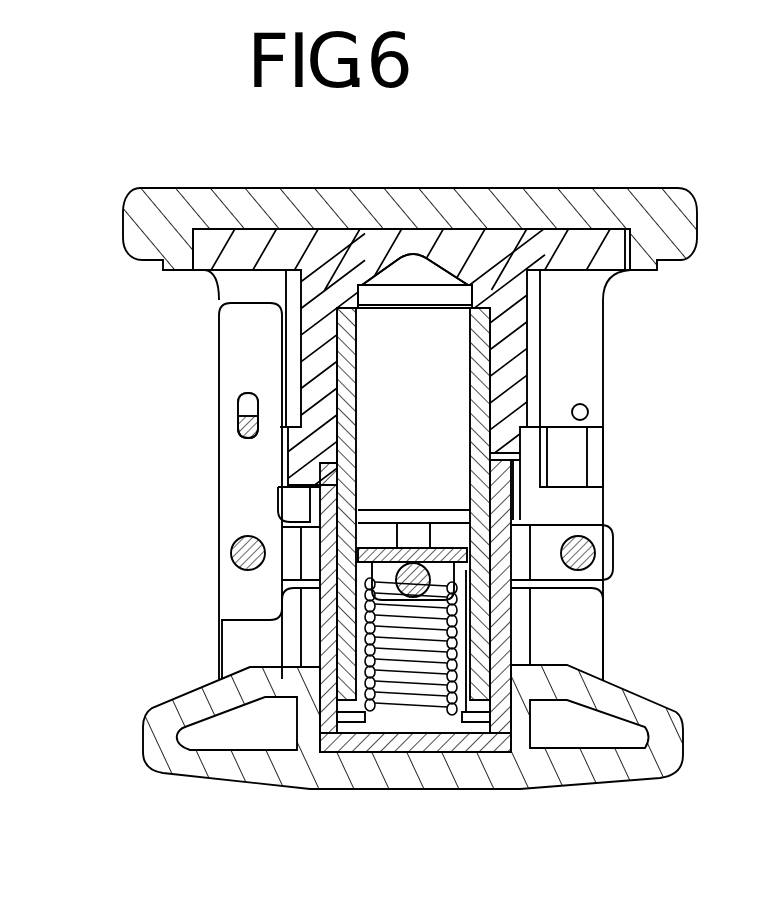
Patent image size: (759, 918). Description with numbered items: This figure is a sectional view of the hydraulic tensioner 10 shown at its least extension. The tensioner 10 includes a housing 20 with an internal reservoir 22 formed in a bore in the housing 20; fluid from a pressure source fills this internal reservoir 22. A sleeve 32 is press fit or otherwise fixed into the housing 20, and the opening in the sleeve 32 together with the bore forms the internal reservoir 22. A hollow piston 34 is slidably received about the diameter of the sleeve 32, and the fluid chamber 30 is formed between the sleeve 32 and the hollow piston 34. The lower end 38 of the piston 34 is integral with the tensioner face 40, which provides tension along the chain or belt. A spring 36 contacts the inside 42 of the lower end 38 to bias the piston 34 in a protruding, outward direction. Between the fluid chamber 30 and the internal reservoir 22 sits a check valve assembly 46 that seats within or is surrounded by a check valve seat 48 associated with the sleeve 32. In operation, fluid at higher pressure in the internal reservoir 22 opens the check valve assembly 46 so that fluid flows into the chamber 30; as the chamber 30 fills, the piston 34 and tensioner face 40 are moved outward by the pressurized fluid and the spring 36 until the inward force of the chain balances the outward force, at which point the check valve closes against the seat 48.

The hydraulic tensioner 10 is at (287, 160).
The housing 20 is at (567, 187).
The internal reservoir 22 is at (410, 337).
The fluid chamber 30 is at (468, 628).
The sleeve 32 is at (500, 510).
The hollow piston 34 is at (310, 728).
The spring 36 is at (476, 655).
The lower end 38 is at (510, 717).
The tensioner face 40 is at (668, 686).
The inside 42 is at (428, 722).
The check valve assembly 46 is at (396, 593).
The check valve seat 48 is at (348, 557).